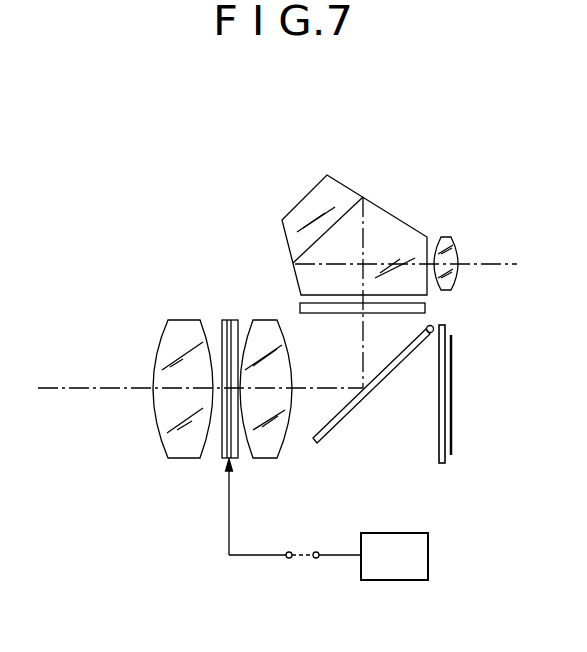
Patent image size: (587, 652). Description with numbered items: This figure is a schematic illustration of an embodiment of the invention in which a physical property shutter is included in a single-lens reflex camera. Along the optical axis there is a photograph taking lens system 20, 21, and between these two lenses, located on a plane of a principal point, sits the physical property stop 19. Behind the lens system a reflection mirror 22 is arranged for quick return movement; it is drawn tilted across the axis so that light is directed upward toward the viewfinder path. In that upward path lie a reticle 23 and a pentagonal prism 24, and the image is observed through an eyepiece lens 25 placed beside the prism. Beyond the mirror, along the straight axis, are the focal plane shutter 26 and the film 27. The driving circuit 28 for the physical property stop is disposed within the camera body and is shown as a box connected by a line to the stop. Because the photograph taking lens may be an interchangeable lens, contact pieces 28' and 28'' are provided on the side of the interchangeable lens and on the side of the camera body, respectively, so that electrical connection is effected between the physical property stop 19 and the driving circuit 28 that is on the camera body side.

The physical property stop 19 is at (230, 320).
The photograph taking lens system 20 is at (178, 458).
The photograph taking lens system 21 is at (265, 458).
The reflection mirror 22 is at (335, 425).
The reticle 23 is at (425, 308).
The pentagonal prism 24 is at (387, 220).
The eyepiece lens 25 is at (455, 250).
The focal plane shutter 26 is at (439, 455).
The film 27 is at (452, 440).
The driving circuit 28 is at (330, 542).
The contact piece 28' is at (293, 580).
The contact piece 28'' is at (328, 580).